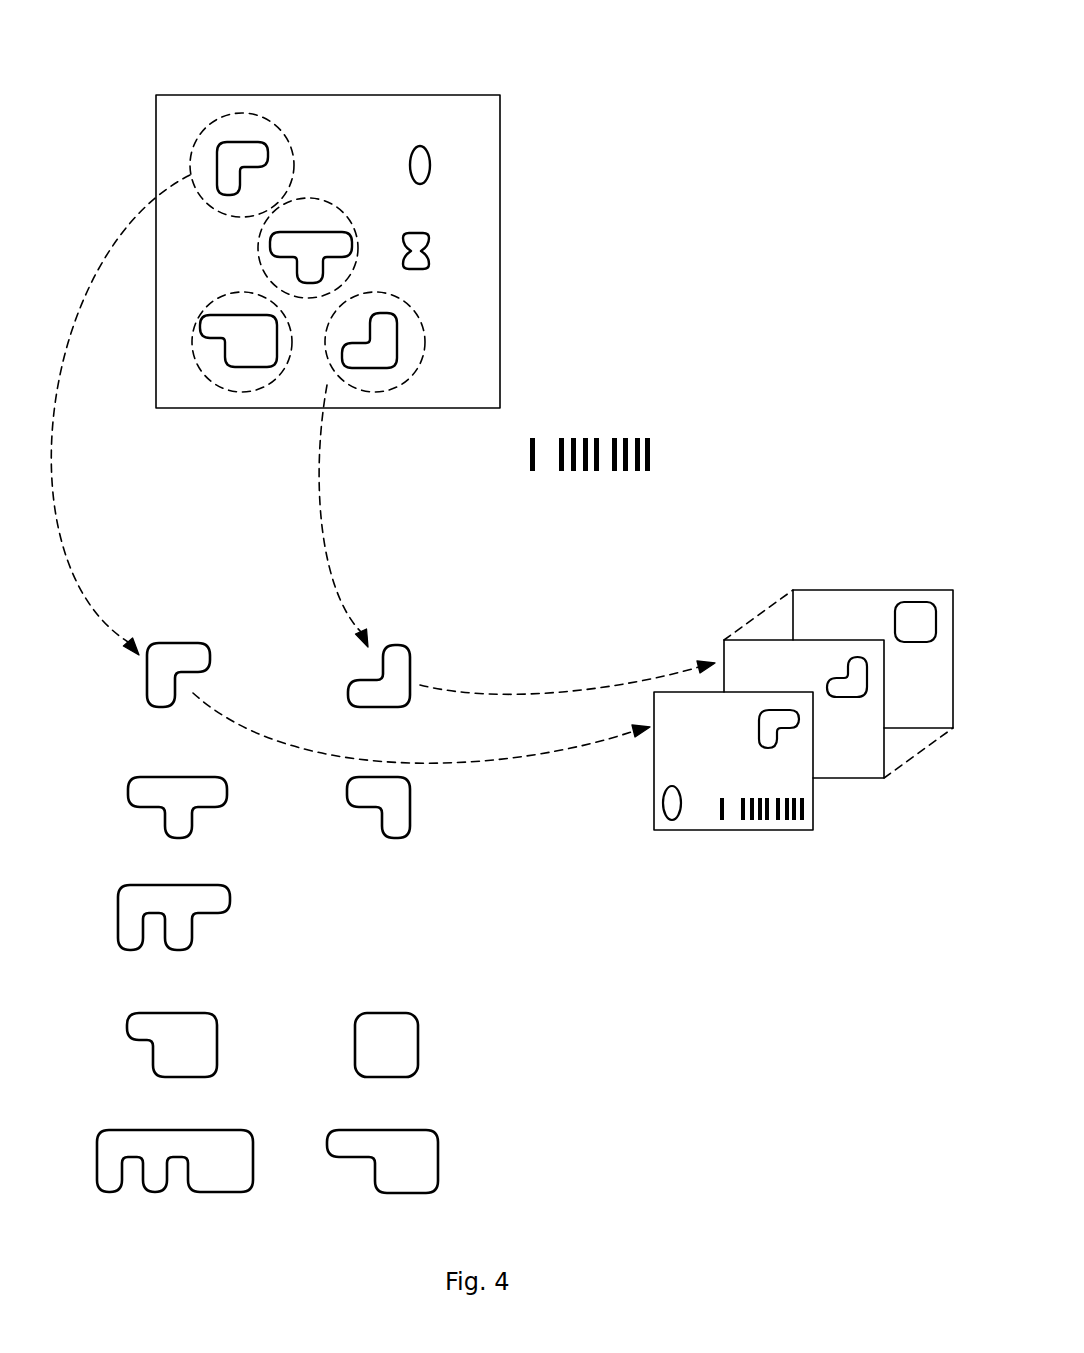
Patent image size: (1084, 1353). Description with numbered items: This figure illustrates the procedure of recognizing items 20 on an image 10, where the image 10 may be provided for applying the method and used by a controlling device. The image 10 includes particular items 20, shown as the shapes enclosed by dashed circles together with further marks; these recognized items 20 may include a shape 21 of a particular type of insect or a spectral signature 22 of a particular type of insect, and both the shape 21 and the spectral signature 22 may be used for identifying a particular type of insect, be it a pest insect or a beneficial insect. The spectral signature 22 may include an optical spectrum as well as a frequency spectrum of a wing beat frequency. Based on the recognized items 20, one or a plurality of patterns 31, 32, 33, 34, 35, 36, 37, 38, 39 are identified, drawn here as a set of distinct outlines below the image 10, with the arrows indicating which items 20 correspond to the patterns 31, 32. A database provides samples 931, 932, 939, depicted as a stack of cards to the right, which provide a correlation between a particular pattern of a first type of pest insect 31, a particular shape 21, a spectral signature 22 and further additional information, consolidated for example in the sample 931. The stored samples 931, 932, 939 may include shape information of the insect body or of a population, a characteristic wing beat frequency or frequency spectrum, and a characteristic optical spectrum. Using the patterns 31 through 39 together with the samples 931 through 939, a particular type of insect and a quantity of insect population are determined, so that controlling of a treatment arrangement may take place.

The image 10 is at (416, 115).
The items 20 is at (270, 245).
The shape 21 is at (450, 159).
The spectral signature 22 is at (435, 268).
The pattern 31 is at (237, 153).
The pattern 32 is at (403, 655).
The pattern 33 is at (317, 243).
The pattern 34 is at (392, 833).
The pattern 35 is at (207, 900).
The pattern 36 is at (244, 352).
The pattern 37 is at (407, 1028).
The pattern 38 is at (232, 1137).
The pattern 39 is at (427, 1145).
The sample 931 is at (695, 820).
The sample 932 is at (850, 767).
The sample 939 is at (933, 723).